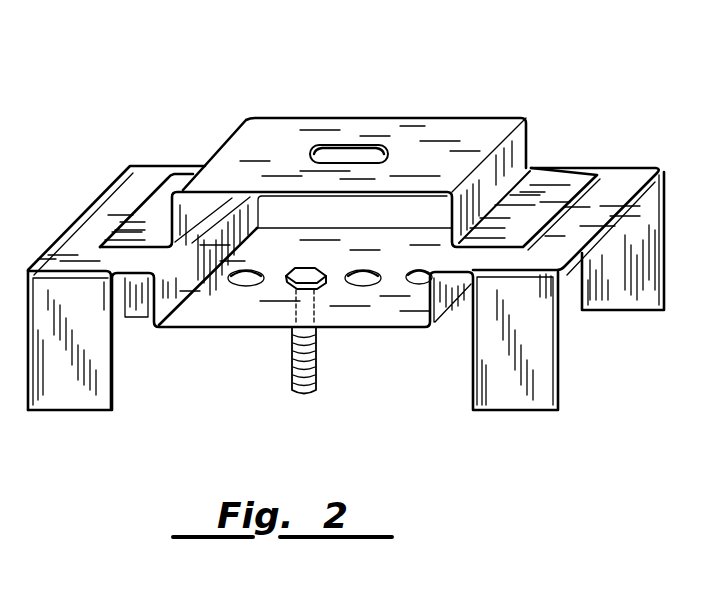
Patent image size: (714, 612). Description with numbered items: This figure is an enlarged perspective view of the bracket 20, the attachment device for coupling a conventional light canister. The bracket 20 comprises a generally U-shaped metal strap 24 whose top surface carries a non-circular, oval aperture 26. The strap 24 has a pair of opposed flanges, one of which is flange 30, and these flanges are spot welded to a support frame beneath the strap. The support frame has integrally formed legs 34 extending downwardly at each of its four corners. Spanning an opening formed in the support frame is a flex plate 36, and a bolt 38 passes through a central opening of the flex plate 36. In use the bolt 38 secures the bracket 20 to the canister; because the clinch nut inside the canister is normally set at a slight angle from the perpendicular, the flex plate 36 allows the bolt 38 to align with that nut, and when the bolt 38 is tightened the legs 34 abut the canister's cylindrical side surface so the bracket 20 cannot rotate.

The bracket 20 is at (566, 112).
The U-shaped metal strap 24 is at (280, 133).
The aperture 26 is at (353, 143).
The flange 30 is at (158, 218).
The legs 34 is at (54, 383).
The flex plate 36 is at (247, 306).
The bolt 38 is at (313, 376).